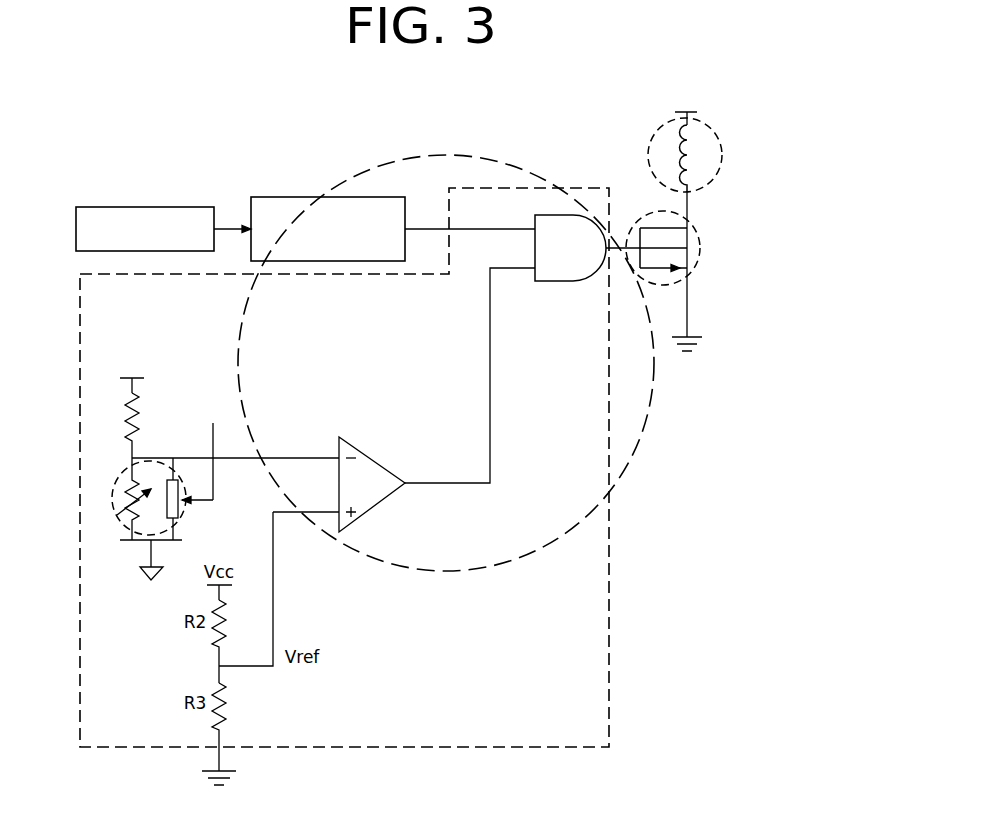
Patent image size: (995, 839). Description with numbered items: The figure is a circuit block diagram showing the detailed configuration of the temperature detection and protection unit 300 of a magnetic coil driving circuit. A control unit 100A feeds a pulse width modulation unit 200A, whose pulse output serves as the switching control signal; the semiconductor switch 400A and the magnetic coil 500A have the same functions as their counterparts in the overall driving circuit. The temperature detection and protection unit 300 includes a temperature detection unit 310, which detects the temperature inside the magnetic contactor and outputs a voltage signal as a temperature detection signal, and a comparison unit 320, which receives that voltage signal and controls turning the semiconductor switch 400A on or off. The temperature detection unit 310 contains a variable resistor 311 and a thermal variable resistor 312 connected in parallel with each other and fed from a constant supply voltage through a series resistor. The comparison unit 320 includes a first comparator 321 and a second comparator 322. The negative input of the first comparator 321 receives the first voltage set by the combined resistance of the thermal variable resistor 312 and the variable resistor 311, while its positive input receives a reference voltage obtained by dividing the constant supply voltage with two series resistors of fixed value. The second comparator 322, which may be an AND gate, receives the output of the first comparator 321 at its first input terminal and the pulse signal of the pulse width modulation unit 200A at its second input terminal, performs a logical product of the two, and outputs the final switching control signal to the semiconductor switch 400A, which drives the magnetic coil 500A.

The control unit 100A is at (146, 207).
The pulse width modulation unit 200A is at (282, 197).
The temperature detection and protection unit 300 is at (590, 178).
The temperature detection unit 310 is at (181, 482).
The variable resistor 311 is at (117, 507).
The thermal variable resistor 312 is at (186, 510).
The comparison unit 320 is at (658, 408).
The first comparator 321 is at (374, 458).
The second comparator 322 is at (558, 283).
The semiconductor switch 400A is at (712, 237).
The magnetic coil 500A is at (723, 132).